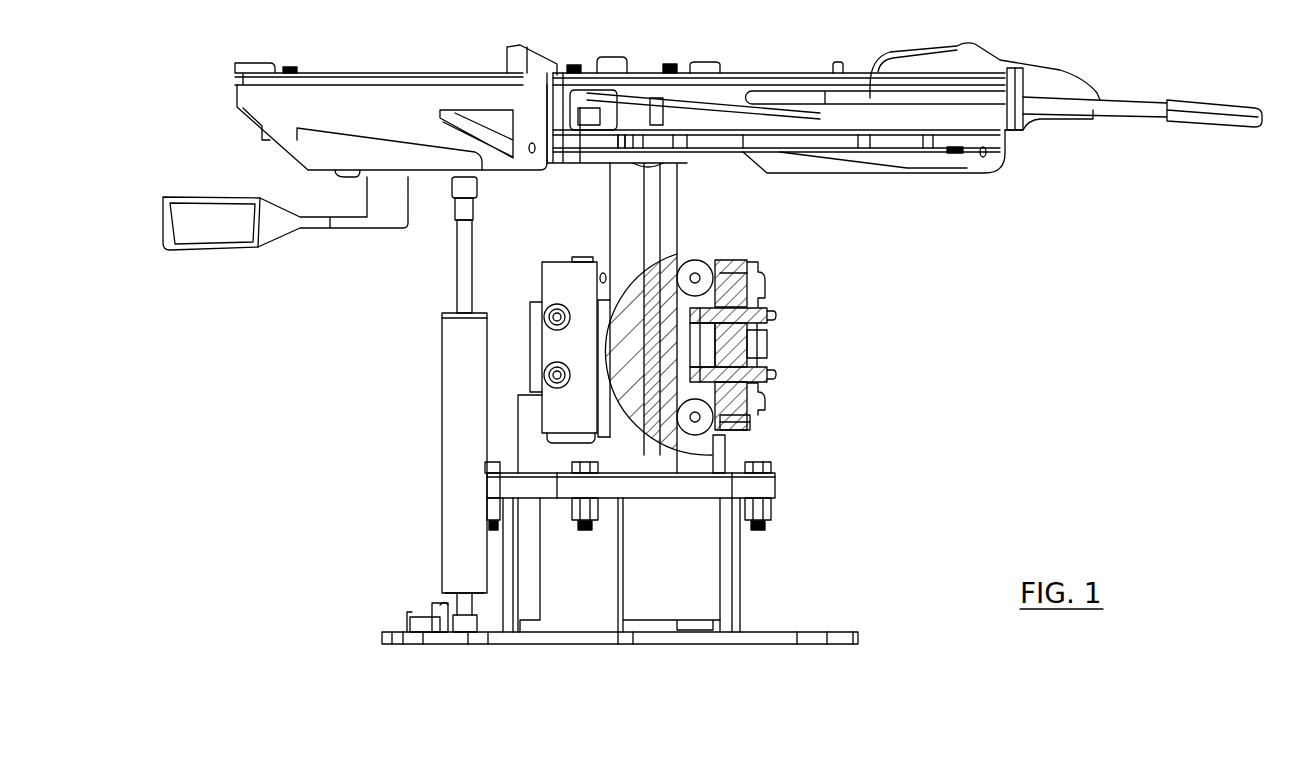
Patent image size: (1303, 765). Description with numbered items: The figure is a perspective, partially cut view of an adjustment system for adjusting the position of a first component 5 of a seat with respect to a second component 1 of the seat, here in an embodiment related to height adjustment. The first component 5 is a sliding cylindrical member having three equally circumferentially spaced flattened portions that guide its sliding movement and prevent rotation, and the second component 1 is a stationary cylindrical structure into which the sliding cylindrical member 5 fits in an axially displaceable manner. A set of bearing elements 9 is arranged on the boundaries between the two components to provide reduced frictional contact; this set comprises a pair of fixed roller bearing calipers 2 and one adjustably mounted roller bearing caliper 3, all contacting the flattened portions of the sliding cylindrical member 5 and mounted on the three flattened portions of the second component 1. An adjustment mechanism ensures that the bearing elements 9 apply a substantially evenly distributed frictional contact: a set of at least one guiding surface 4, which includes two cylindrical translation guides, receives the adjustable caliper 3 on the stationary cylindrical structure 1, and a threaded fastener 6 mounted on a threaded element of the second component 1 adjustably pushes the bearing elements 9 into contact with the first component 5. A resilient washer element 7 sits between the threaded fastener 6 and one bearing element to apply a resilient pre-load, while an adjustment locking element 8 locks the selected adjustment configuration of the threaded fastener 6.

The second component 1 is at (700, 343).
The fixed roller bearing calipers 2 is at (555, 347).
The adjustably mounted roller bearing caliper 3 is at (730, 350).
The guiding surface 4 is at (751, 290).
The first component 5 is at (667, 215).
The threaded fastener 6 is at (755, 362).
The resilient washer element 7 is at (750, 394).
The adjustment locking element 8 is at (753, 405).
The bearing elements 9 is at (706, 268).